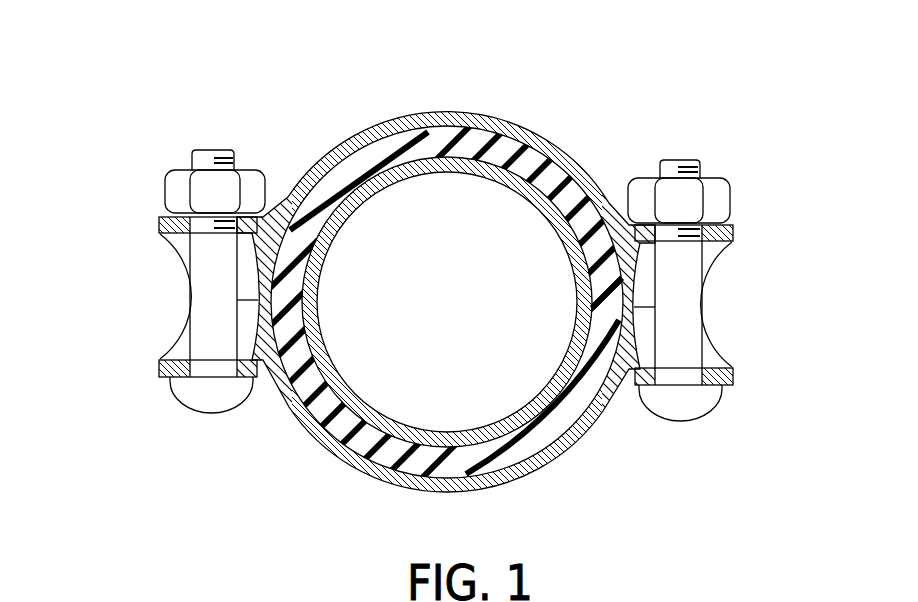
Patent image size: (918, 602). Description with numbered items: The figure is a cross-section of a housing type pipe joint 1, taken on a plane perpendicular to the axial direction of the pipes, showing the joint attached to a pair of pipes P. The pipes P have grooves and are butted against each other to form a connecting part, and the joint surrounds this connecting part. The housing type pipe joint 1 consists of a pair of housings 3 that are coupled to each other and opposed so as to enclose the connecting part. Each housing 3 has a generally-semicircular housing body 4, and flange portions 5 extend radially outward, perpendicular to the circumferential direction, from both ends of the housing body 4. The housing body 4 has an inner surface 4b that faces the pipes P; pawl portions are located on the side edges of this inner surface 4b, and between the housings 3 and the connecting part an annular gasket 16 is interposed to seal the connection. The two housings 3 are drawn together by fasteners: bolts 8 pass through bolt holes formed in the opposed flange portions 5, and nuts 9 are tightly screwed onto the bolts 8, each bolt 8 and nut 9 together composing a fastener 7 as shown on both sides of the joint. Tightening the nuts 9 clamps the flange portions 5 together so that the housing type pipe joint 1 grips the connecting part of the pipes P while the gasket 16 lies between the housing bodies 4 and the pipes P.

The housing type pipe joint 1 is at (459, 301).
The housing 3 is at (387, 102).
The housing body 4 is at (448, 287).
The inner surface 4b is at (613, 281).
The flange portion 5 is at (165, 227).
The screw connection (bolt) 7 is at (53, 230).
The bolt 8 is at (202, 312).
The nut 9 is at (175, 195).
The annular gasket 16 is at (607, 331).
The pipe P is at (558, 227).